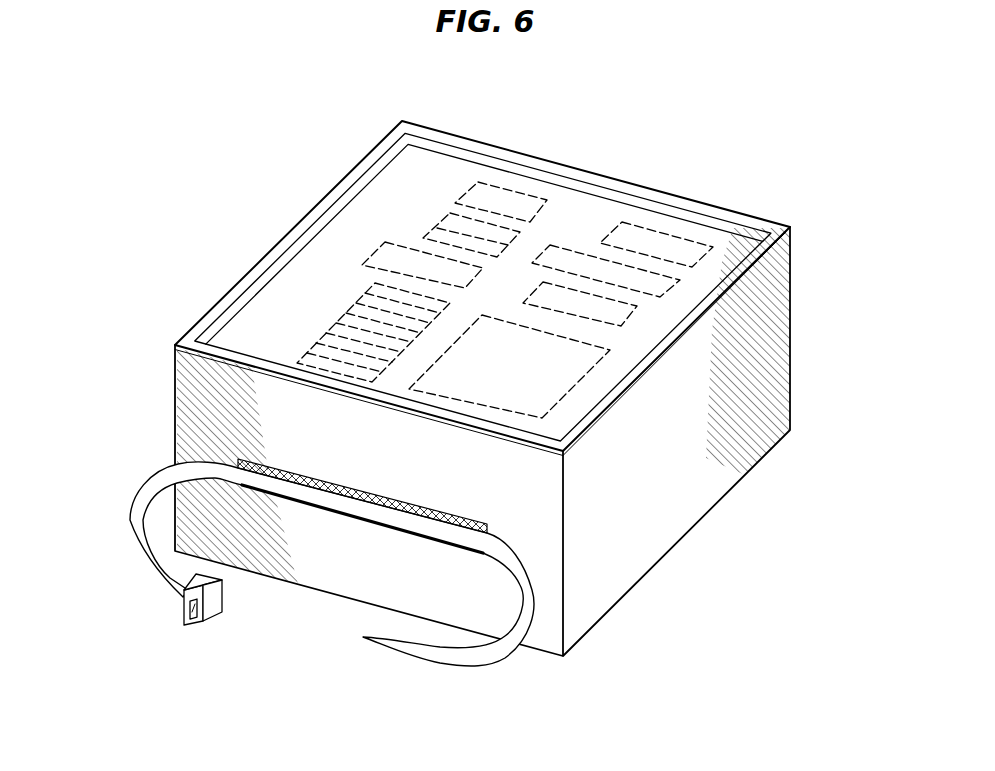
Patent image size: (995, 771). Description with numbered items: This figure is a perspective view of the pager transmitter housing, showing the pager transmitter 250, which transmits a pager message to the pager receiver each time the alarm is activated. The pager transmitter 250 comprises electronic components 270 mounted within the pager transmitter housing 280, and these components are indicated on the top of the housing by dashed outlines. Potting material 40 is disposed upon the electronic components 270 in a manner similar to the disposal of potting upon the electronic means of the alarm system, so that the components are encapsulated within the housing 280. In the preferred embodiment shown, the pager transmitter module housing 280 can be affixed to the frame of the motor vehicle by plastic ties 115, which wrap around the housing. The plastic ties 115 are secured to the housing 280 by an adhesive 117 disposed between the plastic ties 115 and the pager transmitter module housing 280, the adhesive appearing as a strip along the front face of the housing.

The pager transmitter 250 is at (796, 168).
The potting material 40 is at (583, 217).
The electronic components 270 is at (577, 372).
The pager transmitter housing 280 is at (763, 392).
The adhesive 117 is at (323, 483).
The plastic ties 115 is at (132, 520).